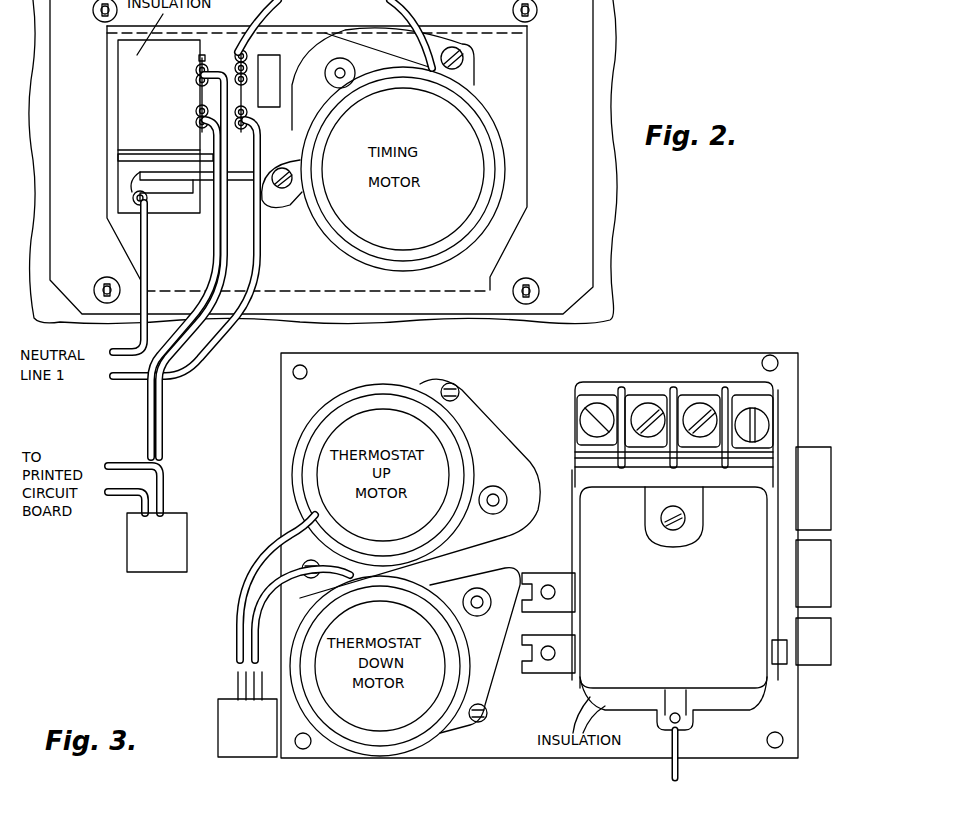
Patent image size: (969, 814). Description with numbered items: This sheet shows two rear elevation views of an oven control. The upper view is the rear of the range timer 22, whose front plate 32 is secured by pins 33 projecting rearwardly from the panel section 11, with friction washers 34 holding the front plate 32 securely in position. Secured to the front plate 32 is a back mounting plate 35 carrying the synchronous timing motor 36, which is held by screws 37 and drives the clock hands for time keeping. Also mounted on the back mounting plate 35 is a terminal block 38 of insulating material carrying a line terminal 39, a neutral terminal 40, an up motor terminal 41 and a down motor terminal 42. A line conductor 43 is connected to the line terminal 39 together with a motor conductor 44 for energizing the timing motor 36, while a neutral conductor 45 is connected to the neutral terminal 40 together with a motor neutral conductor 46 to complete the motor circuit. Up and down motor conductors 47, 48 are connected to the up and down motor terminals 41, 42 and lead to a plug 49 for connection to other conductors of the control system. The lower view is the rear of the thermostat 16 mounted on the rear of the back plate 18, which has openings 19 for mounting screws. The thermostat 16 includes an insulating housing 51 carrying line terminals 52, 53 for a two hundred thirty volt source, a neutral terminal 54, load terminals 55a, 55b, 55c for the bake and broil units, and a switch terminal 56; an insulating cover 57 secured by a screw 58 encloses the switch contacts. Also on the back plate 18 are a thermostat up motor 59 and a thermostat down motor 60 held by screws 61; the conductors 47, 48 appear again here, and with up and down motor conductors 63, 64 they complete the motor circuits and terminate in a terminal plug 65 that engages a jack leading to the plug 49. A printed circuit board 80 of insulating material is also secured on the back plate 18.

In FIG. 2, the panel section 11 is at (614, 262).
In FIG. 2, the range timer 22 is at (616, 216).
In FIG. 2, the front plate 32 is at (596, 62).
In FIG. 2, the pins 33 is at (93, 12).
In FIG. 2, the friction washers 34 is at (100, 22).
In FIG. 2, the back mounting plate 35 is at (515, 122).
In FIG. 2, the synchronous timing motor 36 is at (485, 112).
In FIG. 2, the screws 37 is at (464, 56).
In FIG. 2, the terminal block 38 is at (118, 104).
In FIG. 2, the line terminal 39 is at (238, 97).
In FIG. 2, the neutral terminal 40 is at (125, 176).
In FIG. 2, the up motor terminal 41 is at (199, 58).
In FIG. 2, the down motor terminal 42 is at (200, 132).
In FIG. 2, the line conductor 43 is at (261, 257).
In FIG. 2, the motor conductor 44 is at (268, 8).
In FIG. 2, the neutral conductor 45 is at (128, 340).
In FIG. 2, the motor neutral conductor 46 is at (400, 7).
In FIG. 2, the up motor conductor 47 is at (222, 240).
In FIG. 3, the up motor conductor 47 is at (251, 600).
In FIG. 2, the down motor conductor 48 is at (213, 257).
In FIG. 3, the down motor conductor 48 is at (240, 640).
In FIG. 3, the thermostat 16 is at (578, 560).
In FIG. 3, the back plate 18 is at (290, 406).
In FIG. 3, the openings 19 is at (293, 378).
In FIG. 3, the plug 49 is at (188, 526).
In FIG. 3, the insulating housing 51 is at (583, 472).
In FIG. 3, the line terminal 52 is at (645, 402).
In FIG. 3, the line terminal 53 is at (700, 402).
In FIG. 3, the neutral terminal 54 is at (772, 654).
In FIG. 3, the load terminal 55a is at (578, 596).
In FIG. 3, the load terminal 55b is at (578, 656).
In FIG. 3, the load terminal 55c is at (577, 402).
In FIG. 3, the switch terminal 56 is at (763, 407).
In FIG. 3, the insulating cover 57 is at (673, 632).
In FIG. 3, the screw 58 is at (686, 516).
In FIG. 3, the thermostat up motor 59 is at (493, 440).
In FIG. 3, the thermostat down motor 60 is at (447, 738).
In FIG. 3, the screws 61 is at (459, 392).
In FIG. 3, the up motor conductor 63 is at (236, 683).
In FIG. 3, the down motor conductor 64 is at (120, 498).
In FIG. 3, the terminal plug 65 is at (240, 752).
In FIG. 3, the printed circuit board 80 is at (803, 450).